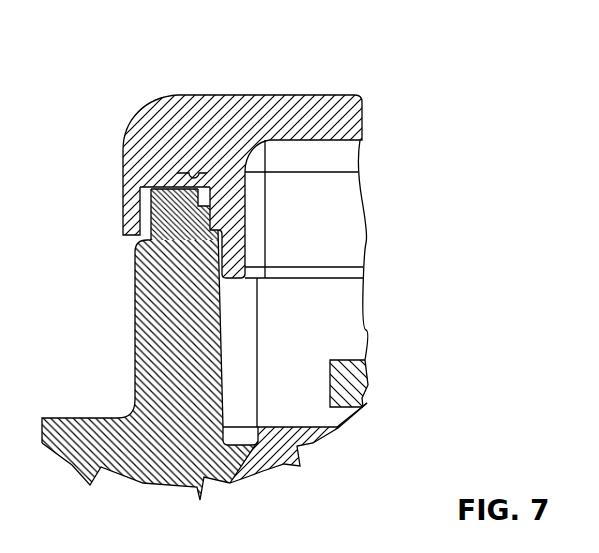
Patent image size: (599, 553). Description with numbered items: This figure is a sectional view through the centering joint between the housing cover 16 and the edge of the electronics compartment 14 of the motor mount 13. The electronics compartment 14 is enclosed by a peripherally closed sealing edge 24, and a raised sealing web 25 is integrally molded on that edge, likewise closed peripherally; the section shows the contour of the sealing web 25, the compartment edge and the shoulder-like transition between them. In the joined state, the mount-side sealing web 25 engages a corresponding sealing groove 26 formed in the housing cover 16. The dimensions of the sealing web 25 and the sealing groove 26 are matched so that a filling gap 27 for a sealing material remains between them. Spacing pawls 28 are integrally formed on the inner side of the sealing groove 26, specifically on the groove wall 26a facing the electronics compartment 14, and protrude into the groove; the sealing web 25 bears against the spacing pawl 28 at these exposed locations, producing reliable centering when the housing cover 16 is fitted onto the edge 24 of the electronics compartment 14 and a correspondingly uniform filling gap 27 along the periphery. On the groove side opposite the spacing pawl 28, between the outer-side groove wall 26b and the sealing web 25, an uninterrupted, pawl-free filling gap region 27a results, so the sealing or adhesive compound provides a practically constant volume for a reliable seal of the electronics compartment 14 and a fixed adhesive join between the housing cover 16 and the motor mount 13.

The motor mount 13 is at (242, 478).
The electronics compartment 14 is at (340, 338).
The housing cover 16 is at (252, 152).
The sealing edge of the electronics compartment 24 is at (143, 323).
The sealing web 25 is at (173, 180).
The sealing groove 26 is at (196, 174).
The groove wall facing the electronics compartment 26a is at (236, 240).
The outer-side groove wall 26b is at (123, 223).
The filling gap 27 is at (151, 133).
The filling gap region 27a is at (142, 208).
The spacing pawl 28 is at (217, 203).